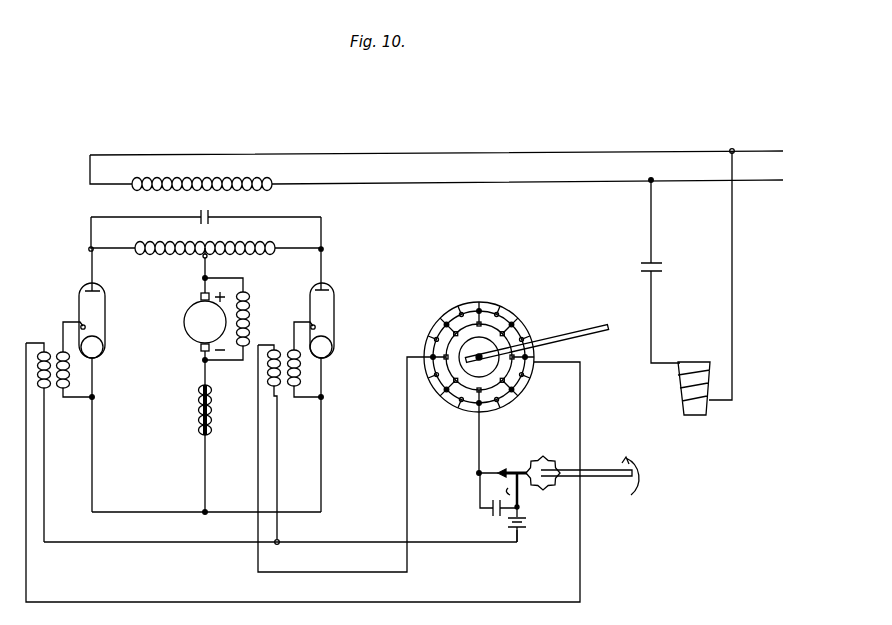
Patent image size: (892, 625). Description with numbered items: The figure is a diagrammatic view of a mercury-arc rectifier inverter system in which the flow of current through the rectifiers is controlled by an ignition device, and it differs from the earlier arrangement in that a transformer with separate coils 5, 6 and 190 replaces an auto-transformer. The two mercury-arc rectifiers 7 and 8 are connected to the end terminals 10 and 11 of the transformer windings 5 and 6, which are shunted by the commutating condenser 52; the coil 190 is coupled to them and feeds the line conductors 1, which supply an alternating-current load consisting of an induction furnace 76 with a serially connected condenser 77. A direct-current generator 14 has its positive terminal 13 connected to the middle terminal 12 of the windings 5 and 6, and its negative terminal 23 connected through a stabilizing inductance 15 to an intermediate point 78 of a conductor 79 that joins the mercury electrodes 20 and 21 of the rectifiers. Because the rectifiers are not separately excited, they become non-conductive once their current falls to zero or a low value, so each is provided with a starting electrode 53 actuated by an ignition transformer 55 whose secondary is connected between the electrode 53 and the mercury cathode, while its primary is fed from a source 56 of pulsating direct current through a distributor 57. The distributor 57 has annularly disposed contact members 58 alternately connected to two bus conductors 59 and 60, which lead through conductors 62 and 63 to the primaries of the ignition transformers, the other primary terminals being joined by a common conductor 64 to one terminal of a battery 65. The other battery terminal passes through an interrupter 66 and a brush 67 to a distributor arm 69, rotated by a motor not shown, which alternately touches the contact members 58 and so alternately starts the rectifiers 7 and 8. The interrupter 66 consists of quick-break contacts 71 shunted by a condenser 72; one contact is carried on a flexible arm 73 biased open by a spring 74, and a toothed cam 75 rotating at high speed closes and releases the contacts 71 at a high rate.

The line conductors 1 is at (368, 154).
The transformer coil 190 is at (206, 184).
The commutating condenser 52 is at (211, 216).
The transformer winding 5 is at (171, 244).
The transformer winding 6 is at (257, 244).
The end terminal 10 is at (88, 250).
The end terminal 11 is at (323, 250).
The middle terminal 12 is at (203, 258).
The positive terminal 13 is at (203, 279).
The mercury-arc rectifier 7 is at (78, 302).
The mercury-arc rectifier 8 is at (334, 300).
The starting electrode 53 is at (85, 328).
The mercury electrode 20 is at (103, 348).
The mercury electrode 21 is at (333, 348).
The direct-current generator 14 is at (184, 322).
The negative terminal 23 is at (203, 360).
The stabilizing inductance 15 is at (214, 410).
The ignition transformer 55 is at (55, 400).
The conductor 79 is at (93, 454).
The intermediate point 78 is at (204, 512).
The common conductor 64 is at (280, 540).
The conductor 62 is at (408, 507).
The conductor 63 is at (582, 539).
The distributor 57 is at (548, 307).
The bus conductor 59 is at (486, 301).
The bus conductor 60 is at (470, 312).
The brush 67 is at (496, 414).
The contact members 58 is at (479, 356).
The distributor arm 69 is at (479, 359).
The quick-break contacts 71 is at (501, 470).
The flexible arm 73 is at (520, 503).
The spring 74 is at (507, 489).
The condenser 72 is at (491, 514).
The source of pulsating direct current 56 is at (566, 531).
The battery 65 is at (524, 535).
The interrupter 66 is at (534, 455).
The toothed cam 75 is at (552, 465).
The condenser 77 is at (664, 268).
The induction furnace 76 is at (692, 362).